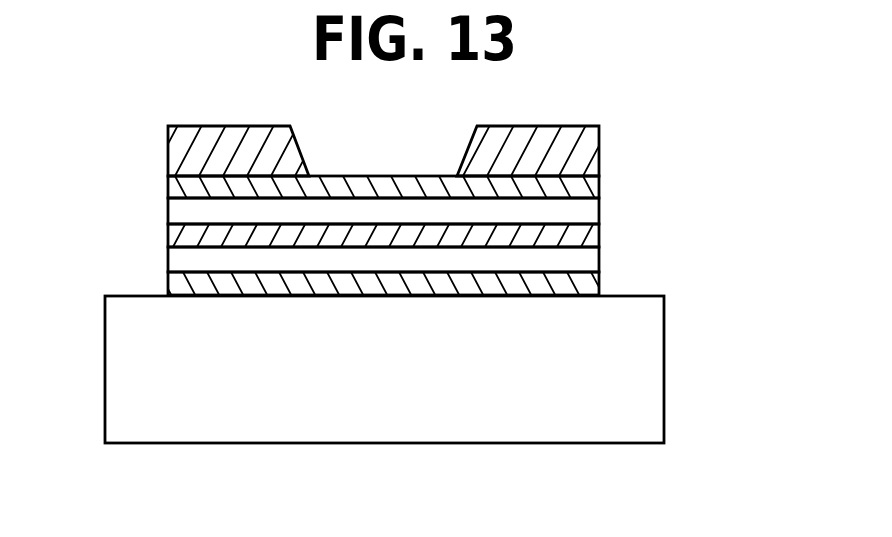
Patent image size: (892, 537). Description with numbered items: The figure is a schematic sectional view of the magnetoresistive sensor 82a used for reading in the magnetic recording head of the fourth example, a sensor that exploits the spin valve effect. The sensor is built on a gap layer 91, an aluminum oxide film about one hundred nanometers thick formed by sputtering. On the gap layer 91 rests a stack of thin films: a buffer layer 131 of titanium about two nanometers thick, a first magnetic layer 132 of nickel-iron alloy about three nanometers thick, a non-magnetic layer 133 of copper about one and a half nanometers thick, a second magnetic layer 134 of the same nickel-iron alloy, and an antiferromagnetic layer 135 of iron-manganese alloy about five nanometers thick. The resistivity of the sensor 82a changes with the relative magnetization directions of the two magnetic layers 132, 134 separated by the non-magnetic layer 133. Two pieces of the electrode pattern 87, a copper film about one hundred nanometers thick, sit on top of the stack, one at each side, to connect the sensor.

The electrode pattern 87 is at (188, 152).
The gap layer 91 is at (650, 371).
The magnetoresistive sensor 82a is at (498, 211).
The buffer layer 131 is at (590, 278).
The first magnetic layer 132 is at (590, 254).
The non-magnetic layer 133 is at (590, 231).
The second magnetic layer 134 is at (590, 208).
The antiferromagnetic layer 135 is at (453, 157).